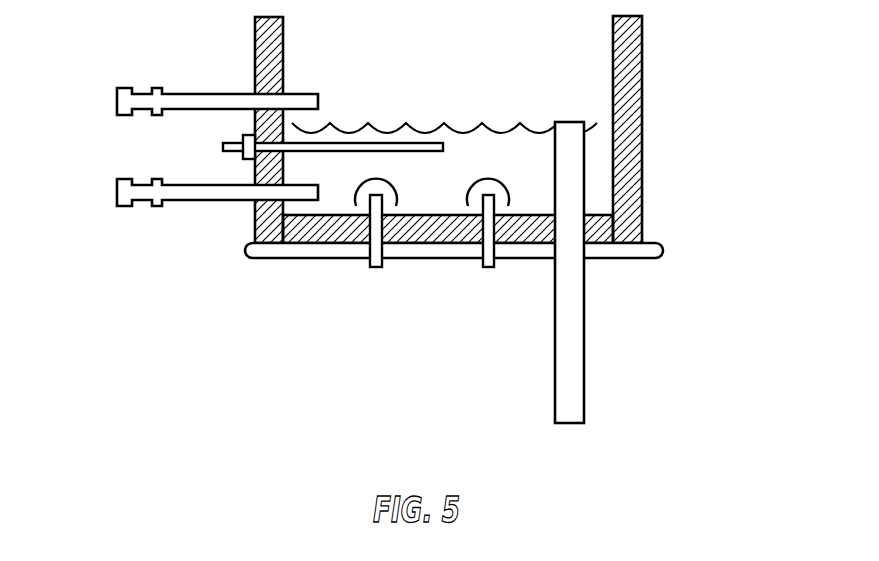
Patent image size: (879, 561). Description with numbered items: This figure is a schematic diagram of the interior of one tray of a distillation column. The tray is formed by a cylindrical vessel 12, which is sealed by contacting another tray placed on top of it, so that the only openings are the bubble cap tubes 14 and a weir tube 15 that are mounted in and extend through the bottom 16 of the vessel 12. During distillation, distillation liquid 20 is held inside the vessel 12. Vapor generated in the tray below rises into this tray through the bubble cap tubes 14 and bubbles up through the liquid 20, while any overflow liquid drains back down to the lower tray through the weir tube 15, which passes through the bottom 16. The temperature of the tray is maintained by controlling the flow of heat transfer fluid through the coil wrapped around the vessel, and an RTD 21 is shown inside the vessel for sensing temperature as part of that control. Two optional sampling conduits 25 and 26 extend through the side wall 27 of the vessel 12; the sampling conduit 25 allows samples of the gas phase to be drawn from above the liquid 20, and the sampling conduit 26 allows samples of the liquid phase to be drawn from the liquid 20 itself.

The cylindrical vessel 12 is at (693, 111).
The bubble cap tubes 14 is at (373, 270).
The weir tube 15 is at (586, 352).
The bottom 16 is at (280, 262).
The distillation liquid 20 is at (509, 169).
The RTD 21 is at (340, 138).
The sampling conduit 25 is at (234, 93).
The sampling conduit 26 is at (237, 201).
The side wall 27 is at (283, 57).